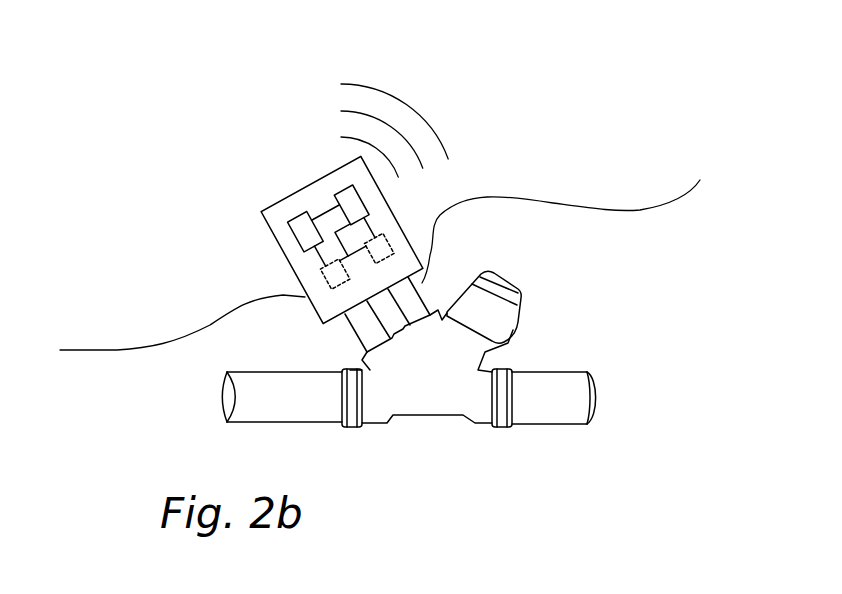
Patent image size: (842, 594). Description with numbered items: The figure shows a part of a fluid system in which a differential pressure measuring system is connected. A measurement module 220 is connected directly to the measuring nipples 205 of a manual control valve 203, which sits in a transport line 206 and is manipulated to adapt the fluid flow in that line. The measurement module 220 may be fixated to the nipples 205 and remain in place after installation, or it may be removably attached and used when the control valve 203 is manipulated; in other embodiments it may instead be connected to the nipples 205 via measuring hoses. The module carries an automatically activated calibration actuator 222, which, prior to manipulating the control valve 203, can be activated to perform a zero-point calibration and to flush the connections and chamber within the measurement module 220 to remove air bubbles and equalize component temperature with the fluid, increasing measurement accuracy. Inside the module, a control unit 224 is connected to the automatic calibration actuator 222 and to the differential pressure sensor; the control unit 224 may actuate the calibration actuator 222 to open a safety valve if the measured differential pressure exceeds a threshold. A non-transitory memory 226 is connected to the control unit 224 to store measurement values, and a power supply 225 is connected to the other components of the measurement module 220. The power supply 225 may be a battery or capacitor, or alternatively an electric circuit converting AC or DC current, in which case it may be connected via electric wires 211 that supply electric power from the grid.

The manual control valve 203 is at (498, 303).
The measuring nipples 205 is at (408, 292).
The transport line 206 is at (288, 415).
The electric wires 211 is at (112, 352).
The measurement module 220 is at (250, 228).
The automatic calibration actuator 222 is at (297, 219).
The control unit 224 is at (343, 190).
The power supply 225 is at (324, 273).
The non-transitory memory 226 is at (392, 238).